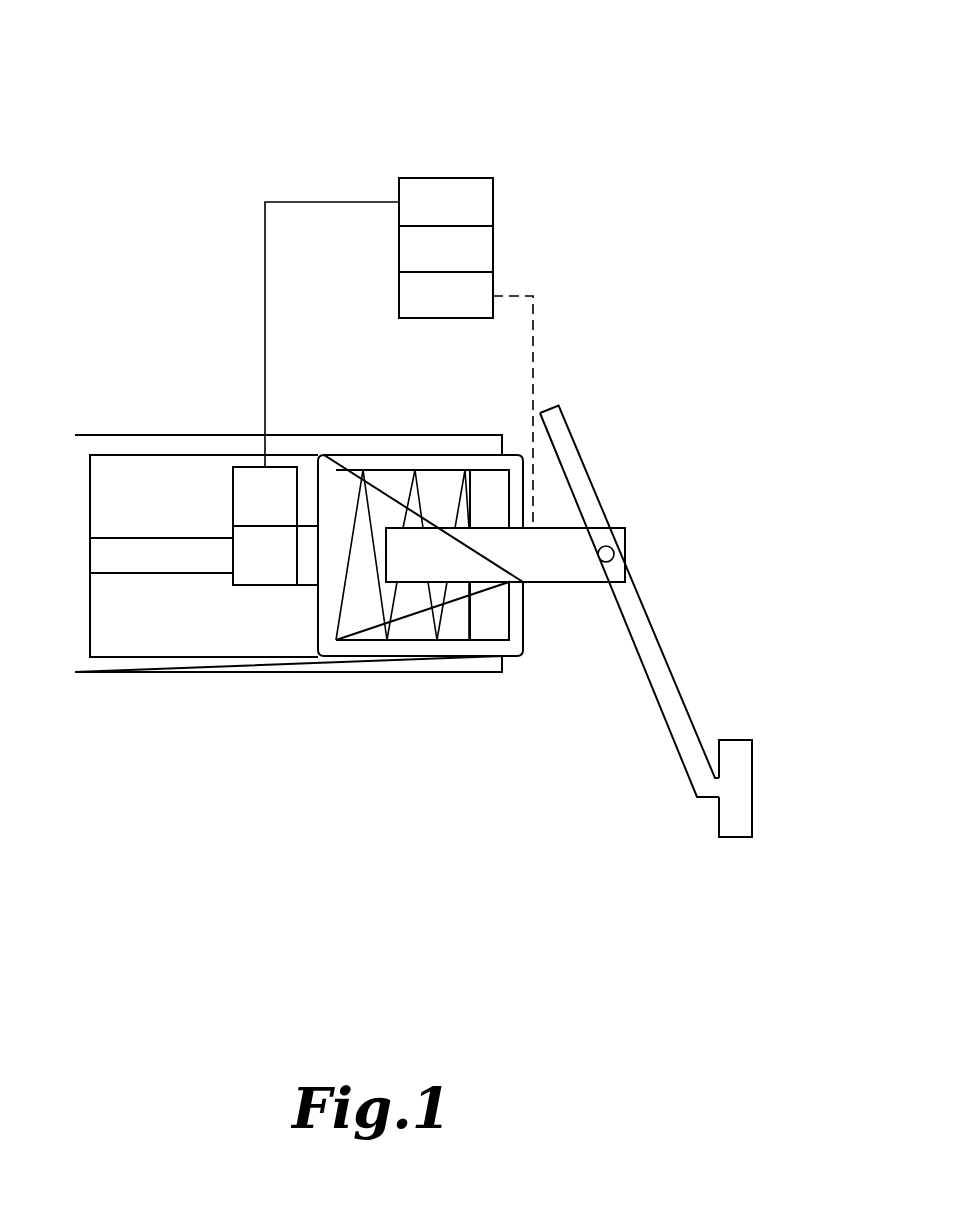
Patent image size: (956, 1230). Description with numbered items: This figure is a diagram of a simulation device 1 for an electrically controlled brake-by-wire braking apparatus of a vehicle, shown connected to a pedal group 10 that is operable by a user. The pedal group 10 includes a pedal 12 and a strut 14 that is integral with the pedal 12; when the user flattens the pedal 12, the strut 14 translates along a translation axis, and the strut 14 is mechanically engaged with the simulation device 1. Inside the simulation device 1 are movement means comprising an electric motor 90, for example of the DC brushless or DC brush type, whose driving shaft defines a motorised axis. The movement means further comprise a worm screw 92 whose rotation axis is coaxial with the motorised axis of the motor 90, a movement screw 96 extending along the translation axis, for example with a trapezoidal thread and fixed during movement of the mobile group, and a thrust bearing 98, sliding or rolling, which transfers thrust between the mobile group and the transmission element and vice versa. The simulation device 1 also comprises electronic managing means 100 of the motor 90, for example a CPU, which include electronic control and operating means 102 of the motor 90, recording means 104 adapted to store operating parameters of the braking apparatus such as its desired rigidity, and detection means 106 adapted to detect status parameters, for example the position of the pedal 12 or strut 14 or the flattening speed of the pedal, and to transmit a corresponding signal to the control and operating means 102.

The simulation device 1 is at (150, 388).
The pedal group 10 is at (691, 720).
The pedal 12 is at (641, 648).
The strut 14 is at (565, 565).
The electric motor 90 is at (254, 489).
The worm screw 92 is at (252, 563).
The movement screw 96 is at (146, 556).
The thrust bearing 98 is at (305, 553).
The electronic managing means 100 is at (433, 178).
The electronic control and operating means 102 is at (379, 327).
The recording means 104 is at (446, 253).
The detection means 106 is at (466, 404).